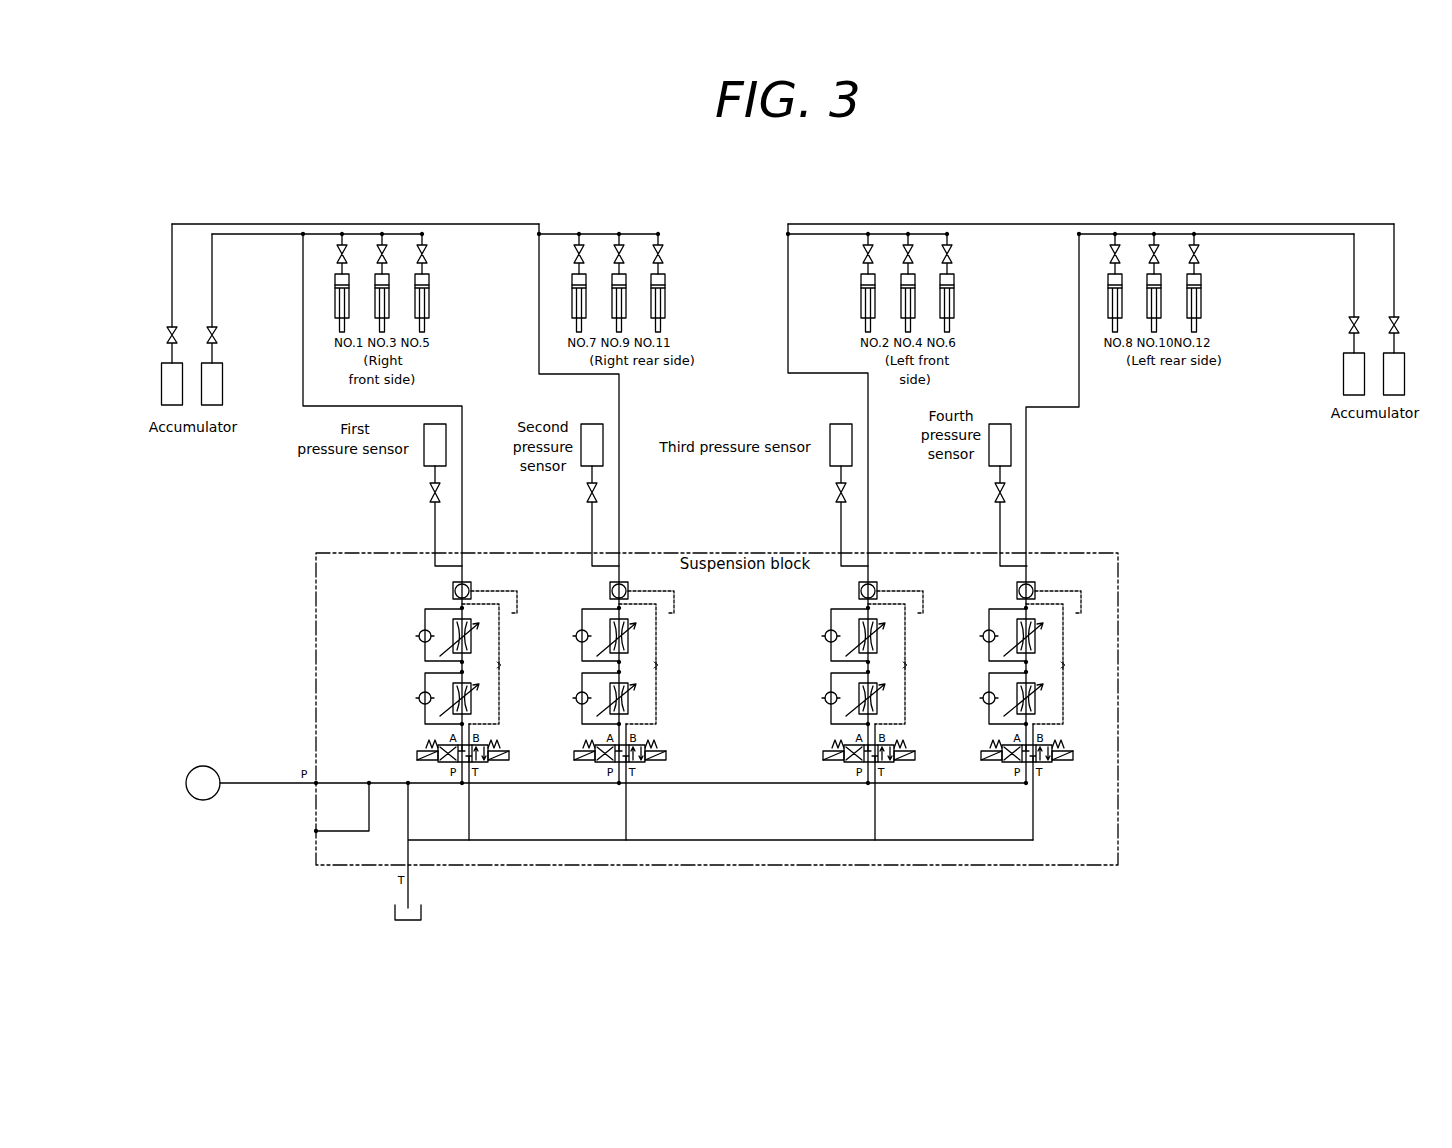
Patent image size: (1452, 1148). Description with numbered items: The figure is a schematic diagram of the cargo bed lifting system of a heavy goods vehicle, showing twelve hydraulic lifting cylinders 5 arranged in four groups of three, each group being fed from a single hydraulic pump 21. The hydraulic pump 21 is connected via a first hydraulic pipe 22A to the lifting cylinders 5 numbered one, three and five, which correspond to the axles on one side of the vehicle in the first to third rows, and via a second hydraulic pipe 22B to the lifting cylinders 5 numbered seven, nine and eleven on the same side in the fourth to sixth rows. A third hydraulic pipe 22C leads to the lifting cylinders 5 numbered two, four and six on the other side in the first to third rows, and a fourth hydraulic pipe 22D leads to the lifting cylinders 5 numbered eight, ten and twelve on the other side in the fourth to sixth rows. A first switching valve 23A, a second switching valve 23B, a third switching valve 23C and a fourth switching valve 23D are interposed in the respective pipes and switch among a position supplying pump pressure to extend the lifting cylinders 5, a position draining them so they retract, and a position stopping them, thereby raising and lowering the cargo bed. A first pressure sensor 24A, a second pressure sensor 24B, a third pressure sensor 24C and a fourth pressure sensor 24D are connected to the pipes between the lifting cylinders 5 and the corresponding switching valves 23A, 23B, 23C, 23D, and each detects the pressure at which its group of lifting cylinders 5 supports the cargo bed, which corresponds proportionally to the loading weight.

The lifting cylinder 5 is at (778, 258).
The hydraulic pump 21 is at (201, 766).
The first hydraulic pipe 22A is at (447, 405).
The second hydraulic pipe 22B is at (556, 375).
The third hydraulic pipe 22C is at (805, 375).
The fourth hydraulic pipe 22D is at (1047, 406).
The first switching valve 23A is at (440, 746).
The second switching valve 23B is at (597, 746).
The third switching valve 23C is at (846, 746).
The fourth switching valve 23D is at (1004, 746).
The first pressure sensor 24A is at (423, 461).
The second pressure sensor 24B is at (580, 462).
The third pressure sensor 24C is at (829, 462).
The fourth pressure sensor 24D is at (988, 462).